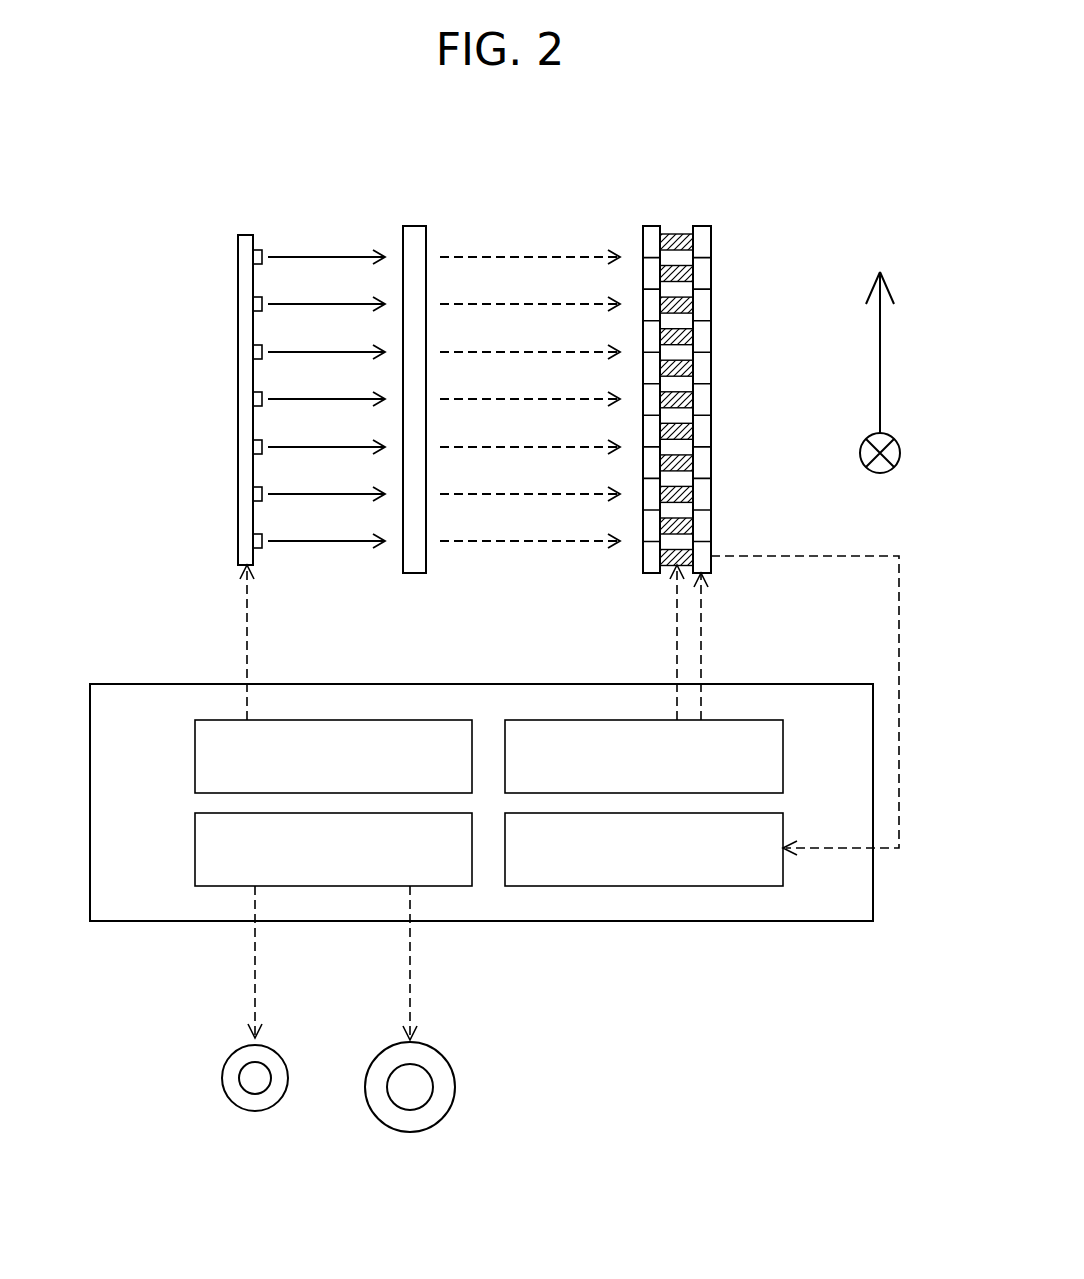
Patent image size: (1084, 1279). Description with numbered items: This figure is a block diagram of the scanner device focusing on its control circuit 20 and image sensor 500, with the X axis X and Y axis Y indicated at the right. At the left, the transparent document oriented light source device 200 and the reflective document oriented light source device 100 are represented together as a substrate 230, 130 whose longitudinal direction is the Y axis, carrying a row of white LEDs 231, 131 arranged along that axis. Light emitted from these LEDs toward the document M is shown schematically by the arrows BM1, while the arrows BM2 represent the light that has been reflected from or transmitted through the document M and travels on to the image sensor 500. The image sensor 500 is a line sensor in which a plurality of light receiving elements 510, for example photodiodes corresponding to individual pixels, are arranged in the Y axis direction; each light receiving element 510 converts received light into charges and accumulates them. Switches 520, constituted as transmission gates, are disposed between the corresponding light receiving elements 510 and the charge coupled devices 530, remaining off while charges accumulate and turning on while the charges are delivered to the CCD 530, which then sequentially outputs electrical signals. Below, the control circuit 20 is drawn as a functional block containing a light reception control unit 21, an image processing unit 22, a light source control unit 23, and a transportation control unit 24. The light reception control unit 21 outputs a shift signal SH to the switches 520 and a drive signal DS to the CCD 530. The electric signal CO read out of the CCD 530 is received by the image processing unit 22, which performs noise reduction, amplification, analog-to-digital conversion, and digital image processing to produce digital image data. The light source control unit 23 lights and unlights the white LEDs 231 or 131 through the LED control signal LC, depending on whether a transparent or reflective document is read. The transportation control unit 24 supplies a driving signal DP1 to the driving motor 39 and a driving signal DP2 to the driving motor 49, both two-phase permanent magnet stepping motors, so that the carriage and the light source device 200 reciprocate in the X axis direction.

The transparent document oriented light source device 200 is at (218, 340).
The reflective document oriented light source device 100 is at (226, 163).
The substrate 230 is at (177, 400).
The substrate 130 is at (238, 252).
The white LEDs 231 is at (286, 373).
The white LEDs 131 is at (262, 252).
The document M is at (412, 226).
The arrow showing light from light source BM1 is at (317, 544).
The arrow showing reflected or transmitted light BM2 is at (513, 544).
The image sensor 500 is at (744, 194).
The light receiving elements 510 is at (650, 226).
The switches 520 is at (678, 233).
The charge coupled devices (CCD) 530 is at (711, 238).
The control circuit 20 is at (830, 684).
The light reception control unit 21 is at (783, 757).
The image processing unit 22 is at (783, 822).
The light source control unit 23 is at (195, 757).
The transportation control unit 24 is at (195, 850).
The LED control signal LC is at (247, 641).
The shift signal SH is at (677, 641).
The drive signal DS is at (701, 641).
The electric signal CO is at (899, 641).
The driving signal DP1 is at (410, 978).
The driving signal DP2 is at (255, 978).
The driving motor 39 is at (372, 1053).
The driving motor 49 is at (224, 1053).
The X axis X is at (891, 453).
The Y axis Y is at (880, 337).